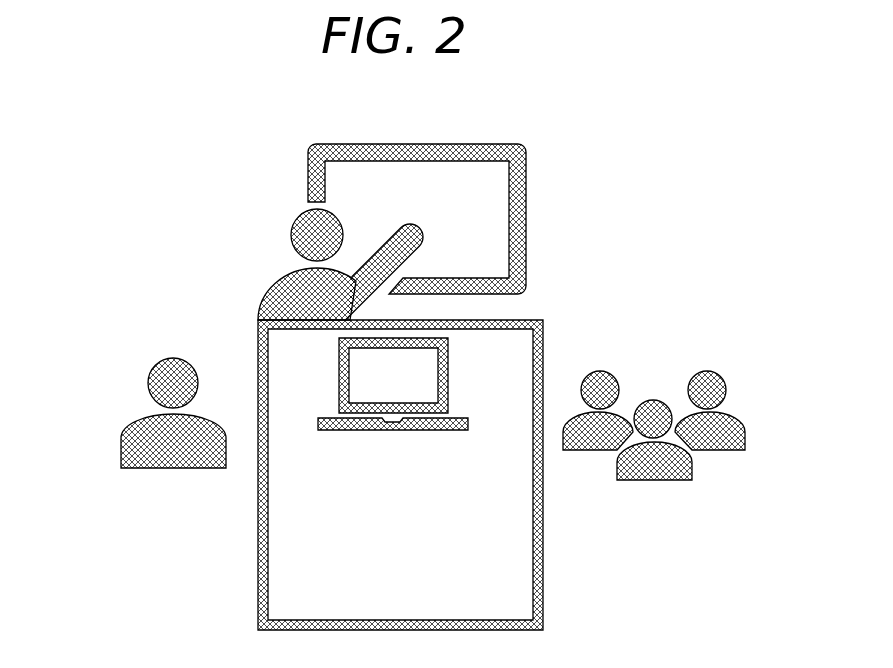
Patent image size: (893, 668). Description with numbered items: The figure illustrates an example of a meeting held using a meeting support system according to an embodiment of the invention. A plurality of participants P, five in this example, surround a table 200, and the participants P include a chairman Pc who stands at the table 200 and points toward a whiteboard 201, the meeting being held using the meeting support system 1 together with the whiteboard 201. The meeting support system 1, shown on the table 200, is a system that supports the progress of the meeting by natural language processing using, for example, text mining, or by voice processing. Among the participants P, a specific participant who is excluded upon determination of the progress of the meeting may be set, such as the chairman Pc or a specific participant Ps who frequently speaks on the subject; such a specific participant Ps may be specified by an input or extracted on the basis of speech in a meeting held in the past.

The meeting support system 1 is at (372, 430).
The table 200 is at (542, 600).
The whiteboard 201 is at (485, 146).
The participants P is at (580, 412).
The chairman Pc is at (277, 284).
The specific participant Ps is at (130, 422).